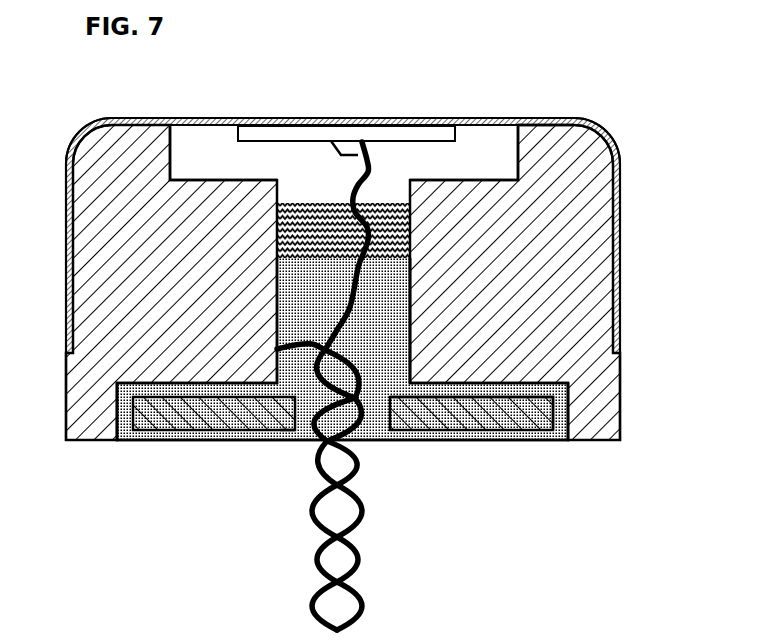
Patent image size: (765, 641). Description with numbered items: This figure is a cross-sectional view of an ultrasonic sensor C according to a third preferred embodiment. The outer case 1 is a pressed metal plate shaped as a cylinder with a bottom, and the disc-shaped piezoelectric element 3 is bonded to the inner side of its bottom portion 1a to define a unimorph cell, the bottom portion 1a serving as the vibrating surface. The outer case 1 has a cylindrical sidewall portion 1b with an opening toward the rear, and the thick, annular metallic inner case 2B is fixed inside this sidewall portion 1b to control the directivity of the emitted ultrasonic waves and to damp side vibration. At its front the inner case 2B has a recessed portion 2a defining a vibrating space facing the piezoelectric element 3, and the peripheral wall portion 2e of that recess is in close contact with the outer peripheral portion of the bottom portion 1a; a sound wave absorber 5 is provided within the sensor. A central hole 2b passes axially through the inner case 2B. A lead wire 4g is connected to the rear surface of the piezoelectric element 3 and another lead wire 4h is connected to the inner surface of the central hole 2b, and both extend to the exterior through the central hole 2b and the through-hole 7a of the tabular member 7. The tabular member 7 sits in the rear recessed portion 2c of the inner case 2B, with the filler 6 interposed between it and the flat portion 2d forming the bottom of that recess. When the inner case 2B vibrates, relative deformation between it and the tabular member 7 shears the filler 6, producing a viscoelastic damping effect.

The ultrasonic sensor C is at (610, 130).
The outer case 1 is at (620, 158).
The bottom portion 1a is at (263, 118).
The sidewall portion 1b is at (618, 263).
The inner case 2B is at (590, 316).
The recessed portion 2a is at (516, 147).
The central hole 2b is at (402, 292).
The recessed portion 2c is at (557, 432).
The flat portion 2d is at (487, 398).
The peripheral wall portion 2e is at (555, 141).
The piezoelectric element 3 is at (398, 133).
The sound wave absorber 5 is at (308, 200).
The filler 6 is at (372, 437).
The tabular member 7 is at (197, 422).
The through-hole 7a is at (293, 438).
The lead wire 4g is at (318, 560).
The lead wire 4h is at (357, 556).